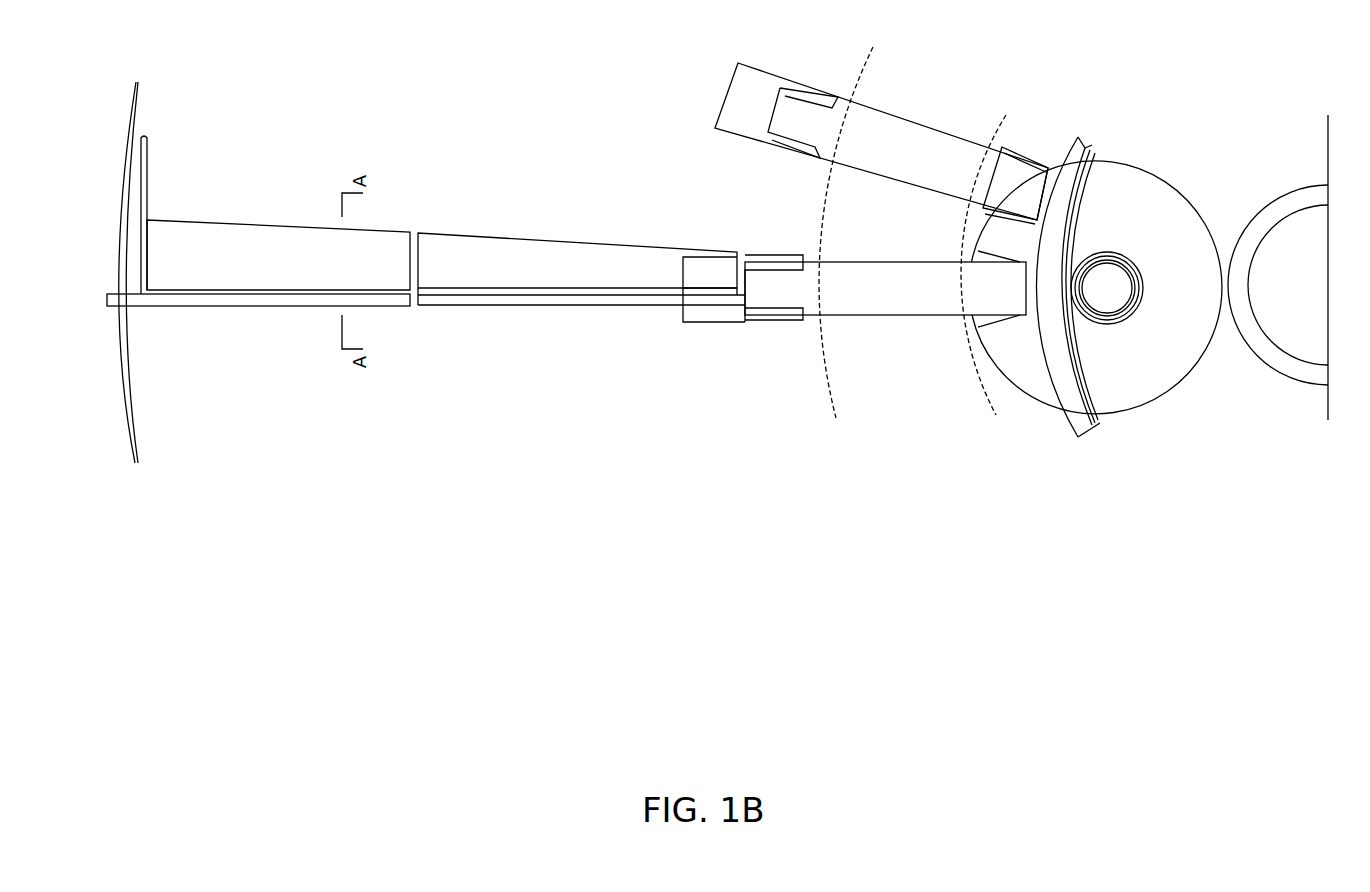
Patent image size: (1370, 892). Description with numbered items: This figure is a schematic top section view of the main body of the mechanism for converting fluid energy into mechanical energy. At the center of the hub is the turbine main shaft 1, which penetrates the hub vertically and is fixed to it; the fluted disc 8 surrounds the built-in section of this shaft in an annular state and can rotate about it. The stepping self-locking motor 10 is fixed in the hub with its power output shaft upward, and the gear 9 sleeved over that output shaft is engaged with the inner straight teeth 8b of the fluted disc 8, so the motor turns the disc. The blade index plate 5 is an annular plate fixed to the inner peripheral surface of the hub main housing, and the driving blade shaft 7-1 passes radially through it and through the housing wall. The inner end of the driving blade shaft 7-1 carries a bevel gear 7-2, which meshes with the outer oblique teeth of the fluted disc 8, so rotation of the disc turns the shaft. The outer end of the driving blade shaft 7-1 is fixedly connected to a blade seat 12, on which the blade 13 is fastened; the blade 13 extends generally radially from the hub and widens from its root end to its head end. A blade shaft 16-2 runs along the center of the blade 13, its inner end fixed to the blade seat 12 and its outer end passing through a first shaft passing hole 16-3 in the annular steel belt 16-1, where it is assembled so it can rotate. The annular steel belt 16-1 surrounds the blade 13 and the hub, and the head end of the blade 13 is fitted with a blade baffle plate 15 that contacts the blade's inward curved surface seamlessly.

The turbine main shaft 1 is at (1308, 223).
The blade index plate 5 is at (848, 332).
The driving blade shaft 7-1 is at (891, 138).
The bevel gear 7-2 is at (1017, 148).
The fluted disc 8 is at (1082, 148).
The inner straight teeth 8b is at (1090, 197).
The gear 9 is at (1115, 300).
The stepping self-locking motor 10 is at (1150, 200).
The blade seat 12 is at (723, 310).
The blade 13 is at (497, 277).
The blade baffle plate 15 is at (148, 177).
The annular steel belt 16-1 is at (127, 323).
The blade shaft 16-2 is at (228, 302).
The first shaft passing hole 16-3 is at (122, 292).